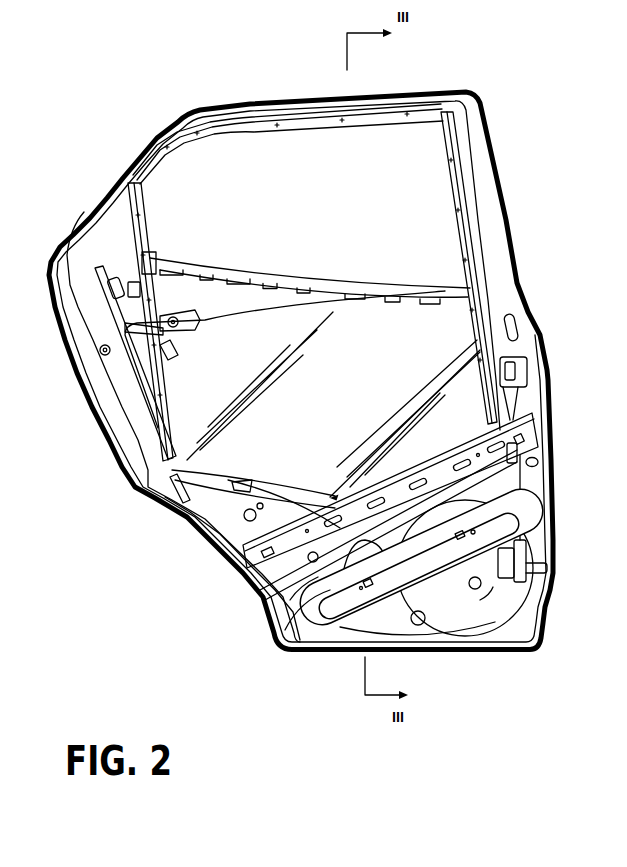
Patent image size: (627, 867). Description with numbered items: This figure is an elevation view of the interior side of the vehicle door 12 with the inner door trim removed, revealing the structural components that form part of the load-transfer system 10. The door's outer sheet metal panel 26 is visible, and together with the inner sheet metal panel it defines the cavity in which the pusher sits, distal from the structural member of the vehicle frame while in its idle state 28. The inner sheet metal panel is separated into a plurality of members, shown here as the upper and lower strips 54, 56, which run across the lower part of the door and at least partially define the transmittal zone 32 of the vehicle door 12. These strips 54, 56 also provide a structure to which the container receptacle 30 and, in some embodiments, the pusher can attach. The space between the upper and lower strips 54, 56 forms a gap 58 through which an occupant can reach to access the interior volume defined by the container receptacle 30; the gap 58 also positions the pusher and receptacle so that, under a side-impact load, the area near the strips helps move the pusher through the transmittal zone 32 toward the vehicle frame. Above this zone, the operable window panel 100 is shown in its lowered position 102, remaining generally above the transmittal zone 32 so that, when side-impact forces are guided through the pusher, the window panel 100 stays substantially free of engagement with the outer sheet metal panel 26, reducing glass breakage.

The load-transfer system 10 is at (233, 613).
The vehicle door 12 is at (502, 146).
The outer sheet metal panel 26 is at (190, 293).
The idle state 28 is at (290, 587).
The container receptacle 30 is at (318, 577).
The transmittal zone 32 is at (330, 496).
The upper strip 54 is at (500, 437).
The lower strip 56 is at (490, 523).
The gap 58 is at (467, 487).
The operable window panel 100 is at (440, 338).
The lowered position 102 is at (425, 300).